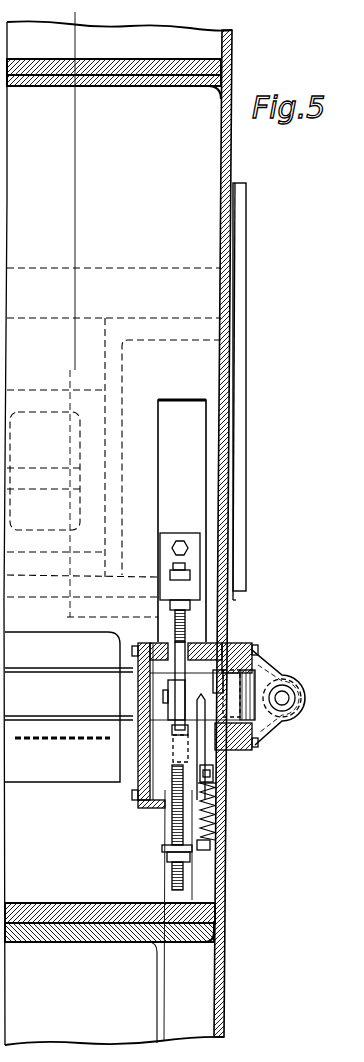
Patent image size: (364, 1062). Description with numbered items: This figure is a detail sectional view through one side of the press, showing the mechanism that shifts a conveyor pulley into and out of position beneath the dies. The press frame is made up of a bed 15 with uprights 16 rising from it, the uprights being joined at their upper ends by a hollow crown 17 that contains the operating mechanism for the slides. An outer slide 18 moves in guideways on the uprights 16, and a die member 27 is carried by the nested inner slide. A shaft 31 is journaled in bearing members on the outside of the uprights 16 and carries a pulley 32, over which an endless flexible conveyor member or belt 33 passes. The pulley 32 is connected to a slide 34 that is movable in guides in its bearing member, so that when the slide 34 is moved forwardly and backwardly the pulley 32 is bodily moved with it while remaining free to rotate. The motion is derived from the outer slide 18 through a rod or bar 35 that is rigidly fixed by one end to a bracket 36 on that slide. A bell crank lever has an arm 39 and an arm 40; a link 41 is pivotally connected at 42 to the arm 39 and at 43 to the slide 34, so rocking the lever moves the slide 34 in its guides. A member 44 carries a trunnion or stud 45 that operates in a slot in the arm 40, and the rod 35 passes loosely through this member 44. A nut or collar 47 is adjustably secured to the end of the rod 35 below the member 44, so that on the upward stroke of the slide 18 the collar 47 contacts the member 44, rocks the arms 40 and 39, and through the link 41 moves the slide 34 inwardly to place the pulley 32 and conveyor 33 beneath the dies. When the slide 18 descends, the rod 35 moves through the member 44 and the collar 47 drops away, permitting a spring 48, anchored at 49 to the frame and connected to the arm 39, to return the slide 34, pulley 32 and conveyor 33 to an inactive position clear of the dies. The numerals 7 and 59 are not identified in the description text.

The section line 7 is at (98, 35).
The bed 15 is at (109, 940).
The uprights 16 is at (232, 176).
The crown 17 is at (215, 42).
The outer slide 18 is at (118, 512).
The die member 27 is at (49, 399).
The shaft 31 is at (290, 709).
The pulley 32 is at (290, 698).
The endless flexible conveyor member 33 is at (82, 672).
The slide 34 is at (253, 643).
The rod or bar 35 is at (176, 632).
The bracket 36 is at (170, 592).
The arm 39 is at (213, 780).
The arm 40 is at (197, 700).
The link 41 is at (214, 800).
The pivotal connection 42 is at (211, 795).
The pivotal connection 43 is at (236, 643).
The member 44 is at (165, 762).
The trunnion or stud 45 is at (178, 768).
The nut or collar 47 is at (170, 857).
The spring 48 is at (213, 822).
The anchor 49 is at (210, 858).
The guide strip 59 is at (62, 750).